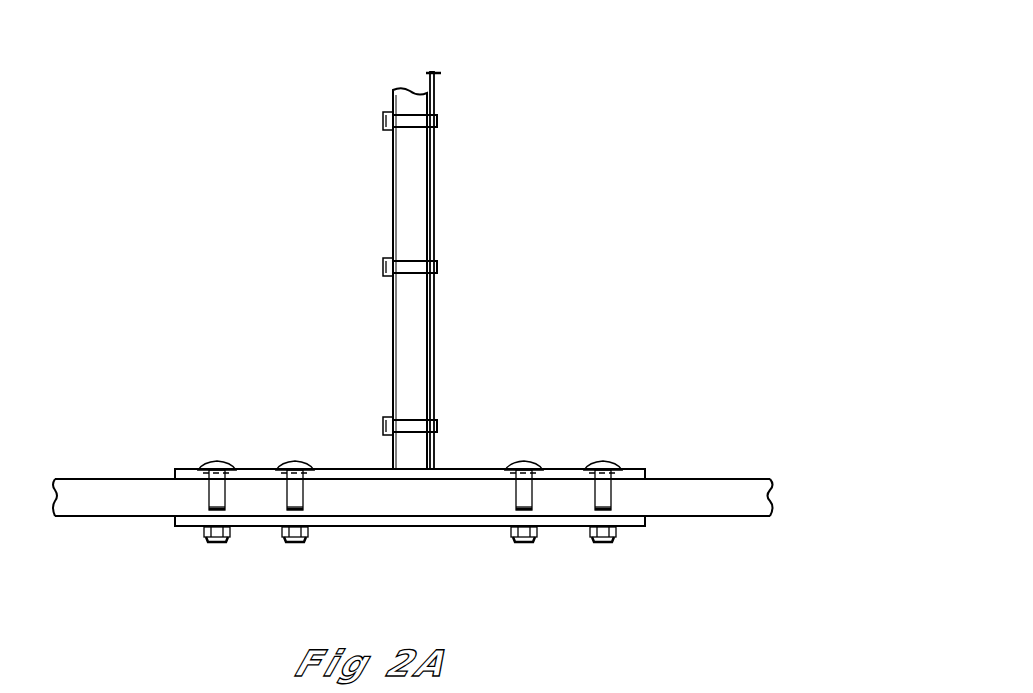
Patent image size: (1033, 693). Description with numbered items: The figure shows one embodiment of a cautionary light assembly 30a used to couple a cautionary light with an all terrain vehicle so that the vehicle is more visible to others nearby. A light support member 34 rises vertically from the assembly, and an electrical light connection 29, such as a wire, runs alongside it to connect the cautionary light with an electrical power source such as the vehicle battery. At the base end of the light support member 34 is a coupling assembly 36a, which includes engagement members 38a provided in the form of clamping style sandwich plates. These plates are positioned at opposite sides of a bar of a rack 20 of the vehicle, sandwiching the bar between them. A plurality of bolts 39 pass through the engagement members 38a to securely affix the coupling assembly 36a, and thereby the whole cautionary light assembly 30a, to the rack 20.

The rack 20 is at (678, 500).
The electrical light connection 29 is at (433, 347).
The cautionary light assembly 30a is at (481, 309).
The light support member 34 is at (402, 322).
The coupling assembly 36a is at (410, 360).
The engagement members 38a is at (442, 472).
The bolts 39 is at (283, 500).